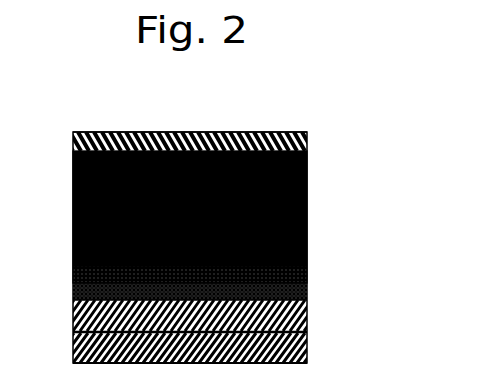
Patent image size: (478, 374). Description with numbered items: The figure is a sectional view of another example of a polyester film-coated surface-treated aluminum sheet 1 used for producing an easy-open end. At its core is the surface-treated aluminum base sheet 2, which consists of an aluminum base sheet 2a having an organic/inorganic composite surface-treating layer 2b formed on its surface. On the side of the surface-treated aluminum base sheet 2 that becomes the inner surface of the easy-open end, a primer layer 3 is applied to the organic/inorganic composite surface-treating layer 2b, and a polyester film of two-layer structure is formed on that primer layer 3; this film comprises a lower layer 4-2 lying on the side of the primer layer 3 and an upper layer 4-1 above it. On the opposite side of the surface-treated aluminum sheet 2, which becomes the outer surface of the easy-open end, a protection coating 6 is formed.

The polyester film-coated surface-treated aluminum sheet 1 is at (275, 116).
The surface-treated aluminum base sheet 2 is at (53, 150).
The aluminum base sheet 2a is at (307, 214).
The organic/inorganic composite surface-treating layer 2b is at (306, 270).
The primer layer 3 is at (306, 283).
The upper layer 4-1 is at (306, 343).
The lower layer 4-2 is at (306, 310).
The protection coating 6 is at (307, 134).